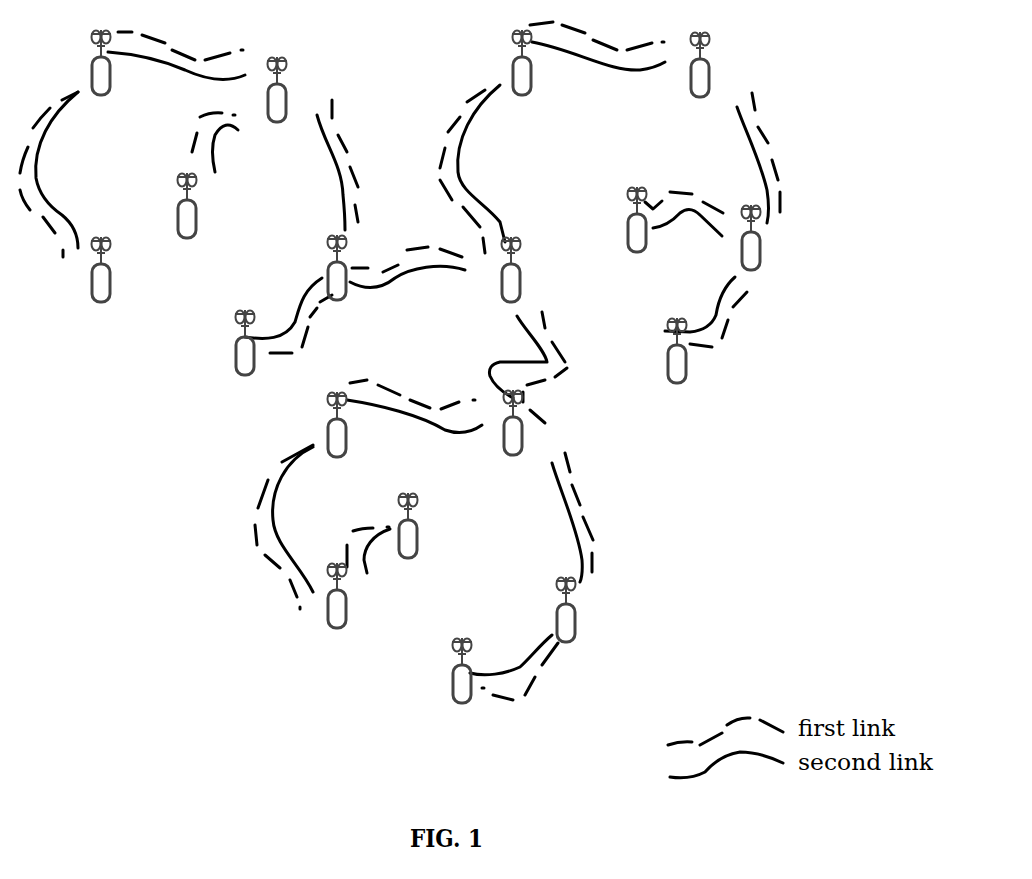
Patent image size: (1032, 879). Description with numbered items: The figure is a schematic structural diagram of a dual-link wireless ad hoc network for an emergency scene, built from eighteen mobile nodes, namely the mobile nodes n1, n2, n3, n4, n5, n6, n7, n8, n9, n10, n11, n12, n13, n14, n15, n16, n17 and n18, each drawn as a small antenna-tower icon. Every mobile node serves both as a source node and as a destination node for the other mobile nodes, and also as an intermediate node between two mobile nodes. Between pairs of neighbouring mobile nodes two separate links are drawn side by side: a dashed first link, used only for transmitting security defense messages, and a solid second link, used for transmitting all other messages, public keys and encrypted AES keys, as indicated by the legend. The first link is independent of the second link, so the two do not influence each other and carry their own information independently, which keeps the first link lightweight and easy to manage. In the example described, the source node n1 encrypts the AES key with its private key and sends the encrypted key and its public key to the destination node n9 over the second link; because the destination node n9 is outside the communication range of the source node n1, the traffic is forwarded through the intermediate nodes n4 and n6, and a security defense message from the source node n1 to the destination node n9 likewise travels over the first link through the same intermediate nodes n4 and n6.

The source node n1 is at (452, 692).
The mobile node n2 is at (332, 620).
The mobile node n3 is at (425, 525).
The intermediate node n4 is at (597, 609).
The mobile node n5 is at (361, 427).
The intermediate node n6 is at (546, 422).
The mobile node n7 is at (231, 354).
The mobile node n8 is at (346, 288).
The destination node n9 is at (532, 269).
The mobile node n10 is at (650, 238).
The mobile node n11 is at (785, 238).
The mobile node n12 is at (704, 361).
The mobile node n13 is at (732, 64).
The mobile node n14 is at (489, 62).
The mobile node n15 is at (305, 89).
The mobile node n16 is at (213, 205).
The mobile node n17 is at (68, 64).
The mobile node n18 is at (75, 274).